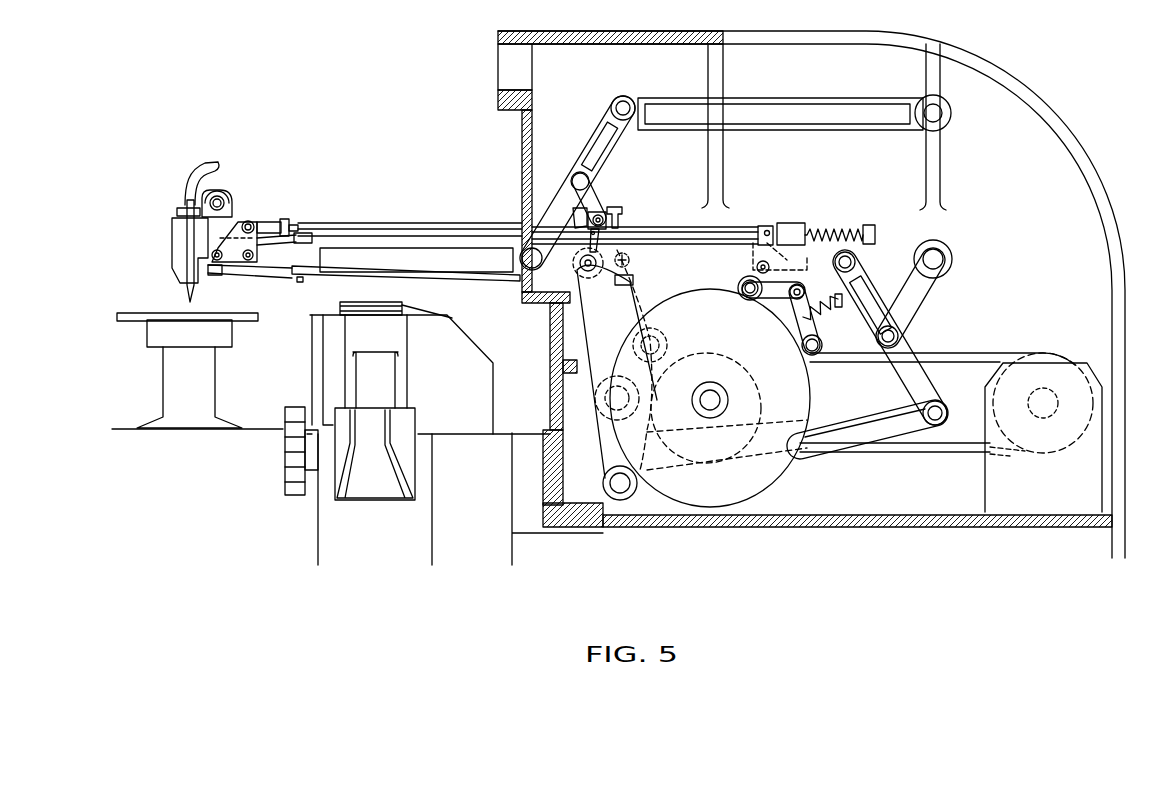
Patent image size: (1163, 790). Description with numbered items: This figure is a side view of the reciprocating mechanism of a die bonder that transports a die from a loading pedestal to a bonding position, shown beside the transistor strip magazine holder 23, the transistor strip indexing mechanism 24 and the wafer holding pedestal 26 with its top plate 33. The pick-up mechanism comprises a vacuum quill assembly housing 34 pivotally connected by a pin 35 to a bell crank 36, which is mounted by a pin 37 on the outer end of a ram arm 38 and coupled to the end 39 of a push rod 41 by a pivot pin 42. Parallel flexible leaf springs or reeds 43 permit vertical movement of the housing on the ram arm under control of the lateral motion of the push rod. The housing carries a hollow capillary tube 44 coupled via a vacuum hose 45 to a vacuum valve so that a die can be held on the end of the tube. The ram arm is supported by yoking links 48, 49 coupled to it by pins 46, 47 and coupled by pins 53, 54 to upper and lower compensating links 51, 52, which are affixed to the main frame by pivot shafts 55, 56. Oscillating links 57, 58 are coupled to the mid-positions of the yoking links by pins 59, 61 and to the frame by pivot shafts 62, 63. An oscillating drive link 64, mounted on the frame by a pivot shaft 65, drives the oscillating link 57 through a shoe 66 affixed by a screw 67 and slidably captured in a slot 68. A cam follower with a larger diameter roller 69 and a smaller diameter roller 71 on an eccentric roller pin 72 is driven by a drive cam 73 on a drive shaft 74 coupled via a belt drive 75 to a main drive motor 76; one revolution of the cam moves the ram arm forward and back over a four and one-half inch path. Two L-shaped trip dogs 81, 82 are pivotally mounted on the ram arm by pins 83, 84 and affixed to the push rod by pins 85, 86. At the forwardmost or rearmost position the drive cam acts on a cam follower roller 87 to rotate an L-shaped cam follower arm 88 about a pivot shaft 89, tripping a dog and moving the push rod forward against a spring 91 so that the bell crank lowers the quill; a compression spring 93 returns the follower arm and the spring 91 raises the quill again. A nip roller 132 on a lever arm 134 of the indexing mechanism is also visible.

The right hand transistor strip magazine holder 23 is at (413, 460).
The transistor strip indexing mechanism 24 is at (477, 355).
The wafer holding pedestal 26 is at (213, 405).
The top plate 33 is at (225, 312).
The vacuum quill assembly housing 34 is at (172, 243).
The pin 35 is at (212, 262).
The bell crank 36 is at (235, 222).
The pin 37 is at (250, 270).
The ram arm 38 is at (315, 277).
The end 39 is at (275, 222).
The push rod 41 is at (482, 224).
The pivot pin 42 is at (250, 222).
The leaf springs or reeds 43 is at (300, 236).
The hollow capillary tube 44 is at (187, 298).
The vacuum hose 45 is at (203, 166).
The pin 46 is at (508, 262).
The pin 47 is at (856, 263).
The yoking link 48 is at (595, 130).
The yoking link 49 is at (900, 372).
The upper compensating link 51 is at (826, 97).
The lower compensating link 52 is at (868, 447).
The pin 53 is at (627, 100).
The pin 54 is at (947, 410).
The pivot shaft 55 is at (922, 100).
The pivot shaft 56 is at (598, 420).
The oscillating link 57 is at (598, 192).
The oscillating link 58 is at (921, 298).
The pin 59 is at (572, 181).
The pin 61 is at (900, 336).
The pivot shaft 62 is at (630, 261).
The pivot shaft 63 is at (952, 258).
The oscillating drive link 64 is at (598, 395).
The pivot shaft 65 is at (604, 478).
The shoe 66 is at (608, 213).
The screw 67 is at (603, 216).
The slot 68 is at (600, 212).
The larger diameter roller 69 is at (642, 325).
The smaller diameter roller 71 is at (635, 345).
The eccentric roller pin 72 is at (662, 345).
The drive cam 73 is at (678, 297).
The drive shaft 74 is at (712, 384).
The belt drive 75 is at (975, 352).
The main drive motor 76 is at (1050, 360).
The L-shaped trip dog 81 is at (758, 230).
The L-shaped trip dog 82 is at (580, 264).
The pin 83 is at (756, 266).
The pin 84 is at (612, 279).
The pin 85 is at (778, 224).
The pin 86 is at (600, 232).
The cam follower roller 87 is at (815, 357).
The L-shaped cam follower arm 88 is at (800, 325).
The pivot shaft 89 is at (740, 292).
The spring 91 is at (836, 228).
The compression spring 93 is at (822, 312).
The nip roller 132 is at (375, 303).
The lever arm 134 is at (430, 309).